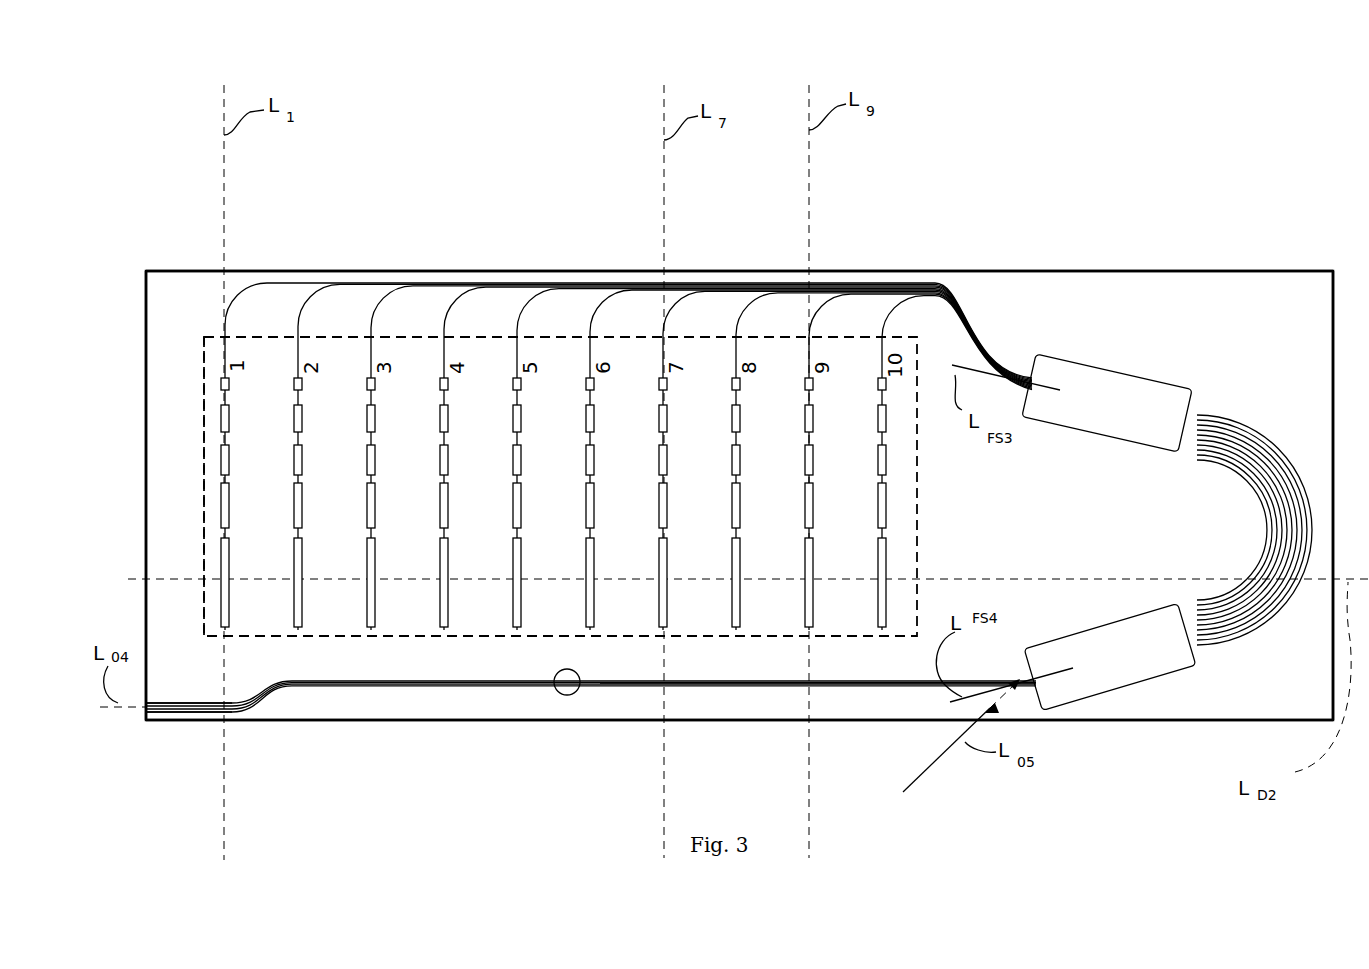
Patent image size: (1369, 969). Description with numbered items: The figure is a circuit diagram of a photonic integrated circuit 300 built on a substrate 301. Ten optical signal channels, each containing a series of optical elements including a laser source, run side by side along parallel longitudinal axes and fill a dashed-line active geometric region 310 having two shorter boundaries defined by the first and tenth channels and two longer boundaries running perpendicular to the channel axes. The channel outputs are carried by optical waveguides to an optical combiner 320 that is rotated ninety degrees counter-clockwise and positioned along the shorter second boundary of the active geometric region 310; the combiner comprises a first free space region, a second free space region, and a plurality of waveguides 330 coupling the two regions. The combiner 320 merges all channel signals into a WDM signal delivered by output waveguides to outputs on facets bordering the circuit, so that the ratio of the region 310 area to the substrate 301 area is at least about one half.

The photonic integrated circuit 300 is at (470, 131).
The substrate 301 is at (1288, 709).
The active geometric region 310 is at (335, 640).
The optical combiner 320 is at (1148, 345).
The waveguides 330 is at (1225, 450).